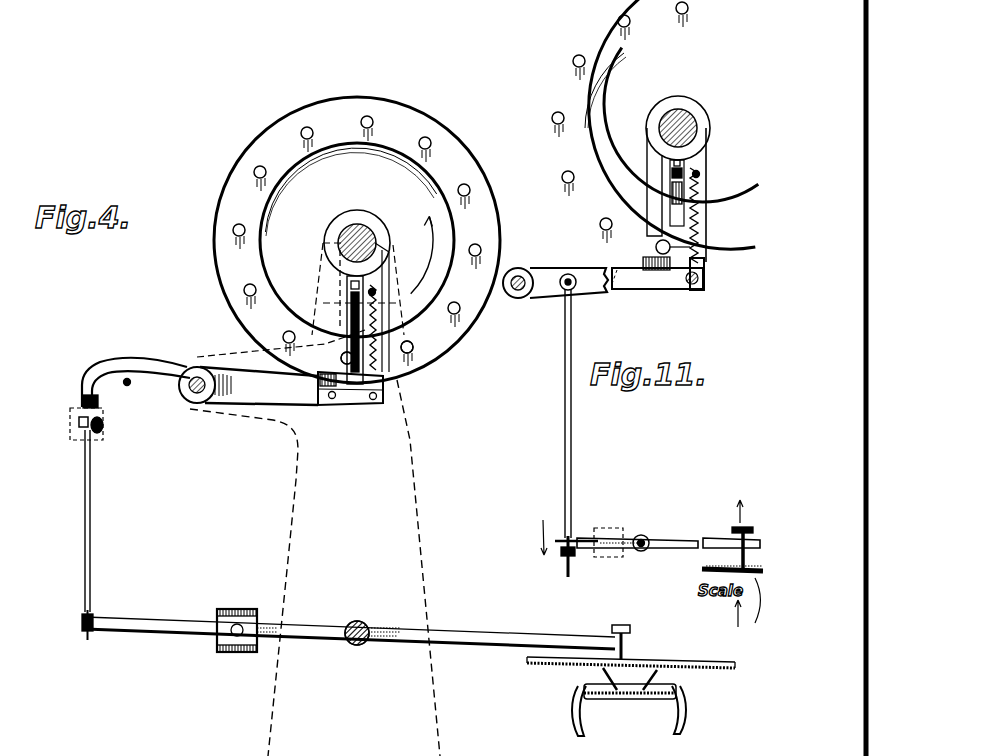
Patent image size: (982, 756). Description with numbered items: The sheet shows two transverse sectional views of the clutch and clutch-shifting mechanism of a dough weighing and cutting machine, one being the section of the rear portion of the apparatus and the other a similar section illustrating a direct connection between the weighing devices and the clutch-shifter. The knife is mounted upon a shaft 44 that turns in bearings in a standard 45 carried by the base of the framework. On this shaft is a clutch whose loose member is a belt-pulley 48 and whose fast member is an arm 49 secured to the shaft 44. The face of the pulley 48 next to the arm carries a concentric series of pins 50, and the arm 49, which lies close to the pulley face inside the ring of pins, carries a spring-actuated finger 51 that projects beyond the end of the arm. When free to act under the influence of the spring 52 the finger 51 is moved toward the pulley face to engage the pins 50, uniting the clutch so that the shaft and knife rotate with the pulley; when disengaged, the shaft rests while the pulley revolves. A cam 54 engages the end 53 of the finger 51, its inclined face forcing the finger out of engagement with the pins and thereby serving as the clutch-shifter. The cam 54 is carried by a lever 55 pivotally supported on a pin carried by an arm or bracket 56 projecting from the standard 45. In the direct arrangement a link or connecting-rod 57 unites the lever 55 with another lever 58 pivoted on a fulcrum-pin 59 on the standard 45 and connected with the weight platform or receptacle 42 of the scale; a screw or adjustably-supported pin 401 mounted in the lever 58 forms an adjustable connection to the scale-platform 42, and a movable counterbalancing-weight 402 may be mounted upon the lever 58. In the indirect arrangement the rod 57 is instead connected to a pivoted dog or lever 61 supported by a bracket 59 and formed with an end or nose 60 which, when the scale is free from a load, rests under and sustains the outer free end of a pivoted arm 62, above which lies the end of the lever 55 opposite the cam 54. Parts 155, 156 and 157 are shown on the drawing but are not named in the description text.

In FIG. 4, the weight platform or receptacle 42 is at (668, 653).
In FIG. 4, the shaft 44 is at (361, 226).
In FIG. 11, the shaft 44 is at (678, 128).
In FIG. 4, the standard 45 is at (356, 617).
In FIG. 4, the belt-pulley 48 is at (412, 118).
In FIG. 11, the belt-pulley 48 is at (671, 124).
In FIG. 4, the arm 49 is at (336, 283).
In FIG. 4, the pins or projections 50 is at (431, 149).
In FIG. 11, the pins or projections 50 is at (575, 178).
In FIG. 4, the spring-actuated finger 51 is at (341, 358).
In FIG. 11, the spring-actuated finger 51 is at (704, 245).
In FIG. 4, the spring 52 is at (347, 300).
In FIG. 11, the spring 52 is at (672, 192).
In FIG. 11, the end of finger 53 is at (705, 268).
In FIG. 4, the cam 54 is at (333, 389).
In FIG. 11, the cam 54 is at (672, 283).
In FIG. 4, the lever 55 is at (234, 373).
In FIG. 11, the lever 55 is at (640, 290).
In FIG. 4, the arm or bracket 56 is at (233, 423).
In FIG. 4, the link or connecting-rod 57 is at (92, 531).
In FIG. 11, the link or connecting-rod 57 is at (566, 447).
In FIG. 4, the lever 58 is at (350, 628).
In FIG. 11, the lever 58 is at (637, 532).
In FIG. 4, the fulcrum-pin 59 is at (104, 431).
In FIG. 11, the fulcrum-pin 59 is at (642, 552).
In FIG. 4, the end or nose 60 is at (93, 406).
In FIG. 4, the pivoted dog or lever 61 is at (80, 422).
In FIG. 4, the pivoted arm 62 is at (81, 389).
In FIG. 4, the pin 155 is at (128, 387).
In FIG. 4, the spring 156 is at (389, 308).
In FIG. 11, the spring 156 is at (703, 197).
In FIG. 4, the pin 157 is at (380, 290).
In FIG. 11, the pin 157 is at (700, 171).
In FIG. 4, the screw or adjustably-supported pin 401 is at (617, 626).
In FIG. 11, the screw or adjustably-supported pin 401 is at (740, 559).
In FIG. 4, the movable counterbalancing-weight 402 is at (247, 604).
In FIG. 11, the movable counterbalancing-weight 402 is at (612, 558).